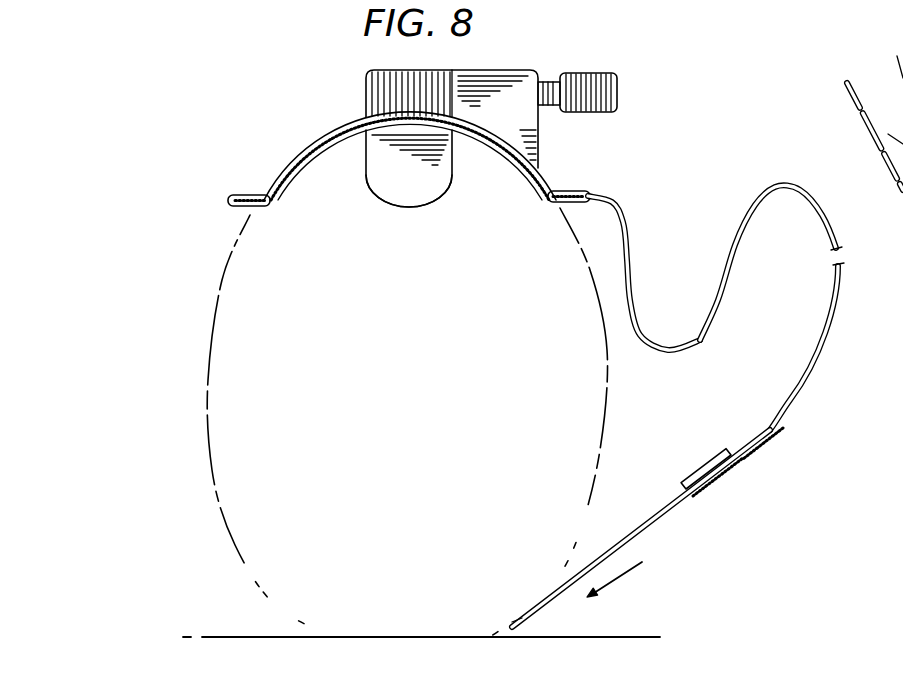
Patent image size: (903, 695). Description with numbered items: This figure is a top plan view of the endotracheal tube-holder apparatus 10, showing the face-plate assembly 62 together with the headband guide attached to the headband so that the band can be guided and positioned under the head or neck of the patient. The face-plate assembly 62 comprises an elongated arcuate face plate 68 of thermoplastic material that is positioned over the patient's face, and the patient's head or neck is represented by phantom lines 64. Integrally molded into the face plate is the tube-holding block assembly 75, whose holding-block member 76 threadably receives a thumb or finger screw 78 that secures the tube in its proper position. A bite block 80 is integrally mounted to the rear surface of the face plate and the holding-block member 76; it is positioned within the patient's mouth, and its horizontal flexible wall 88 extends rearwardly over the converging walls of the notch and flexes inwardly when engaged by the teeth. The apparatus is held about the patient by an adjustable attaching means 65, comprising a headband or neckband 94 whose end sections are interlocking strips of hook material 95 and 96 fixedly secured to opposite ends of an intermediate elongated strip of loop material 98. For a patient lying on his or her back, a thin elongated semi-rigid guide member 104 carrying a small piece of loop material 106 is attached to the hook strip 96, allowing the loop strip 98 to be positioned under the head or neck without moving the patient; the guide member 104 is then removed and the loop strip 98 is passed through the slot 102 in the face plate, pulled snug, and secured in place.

The endotracheal tube-holder apparatus 10 is at (539, 64).
The face-plate assembly 62 is at (318, 124).
The phantom lines 64 is at (210, 378).
The adjustable attaching means 65 is at (773, 445).
The arcuate face plate 68 is at (272, 172).
The tube-holding block assembly 75 is at (548, 131).
The holding-block member 76 is at (387, 78).
The thumb or finger screw 78 is at (605, 86).
The bite block 80 is at (434, 203).
The horizontal flexible wall 88 is at (384, 176).
The headband or neckband 94 is at (796, 188).
The hook material strip 95 is at (620, 212).
The hook material strip 96 is at (757, 438).
The loop material strip 98 is at (841, 300).
The slot 102 is at (242, 212).
The guide member 104 is at (666, 522).
The piece of loop material 106 is at (679, 566).